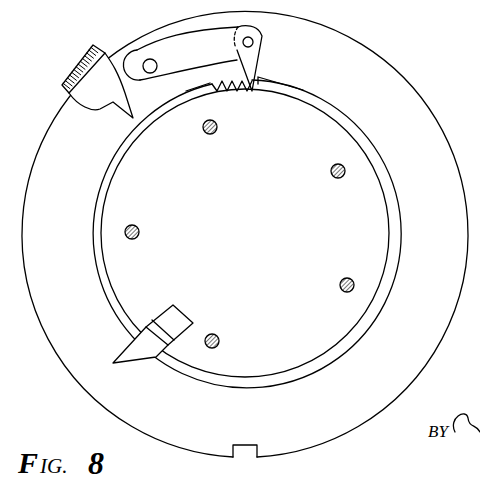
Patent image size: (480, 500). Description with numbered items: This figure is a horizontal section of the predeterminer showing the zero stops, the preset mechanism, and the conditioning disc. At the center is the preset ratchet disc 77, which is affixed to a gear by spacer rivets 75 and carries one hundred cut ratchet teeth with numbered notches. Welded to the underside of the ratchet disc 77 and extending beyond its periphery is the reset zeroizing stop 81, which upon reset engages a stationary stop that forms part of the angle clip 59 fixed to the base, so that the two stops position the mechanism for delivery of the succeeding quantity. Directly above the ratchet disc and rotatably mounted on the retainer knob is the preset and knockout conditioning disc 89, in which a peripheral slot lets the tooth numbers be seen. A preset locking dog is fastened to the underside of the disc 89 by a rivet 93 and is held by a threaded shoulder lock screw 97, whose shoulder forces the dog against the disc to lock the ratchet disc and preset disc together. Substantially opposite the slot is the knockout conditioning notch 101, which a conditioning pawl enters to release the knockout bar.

The angle clip 59 is at (108, 53).
The spacer rivets 75 is at (216, 130).
The preset ratchet disc 77 is at (385, 170).
The reset zeroizing stop 81 is at (142, 360).
The preset and knockout conditioning disc 89 is at (407, 82).
The rivet 93 is at (157, 64).
The threaded shoulder lock screw 97 is at (253, 42).
The knockout conditioning notch 101 is at (256, 452).